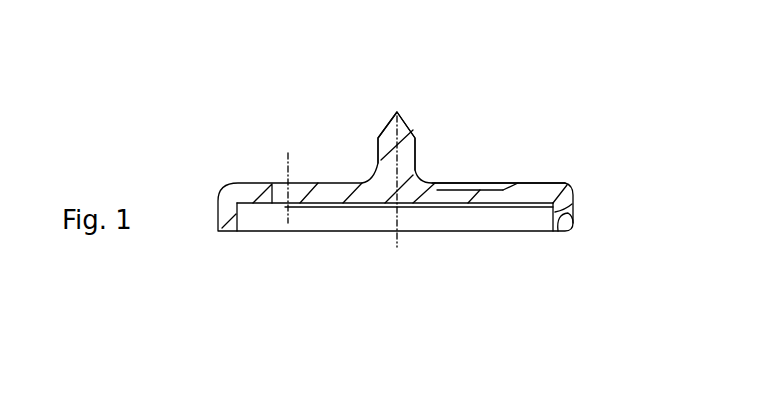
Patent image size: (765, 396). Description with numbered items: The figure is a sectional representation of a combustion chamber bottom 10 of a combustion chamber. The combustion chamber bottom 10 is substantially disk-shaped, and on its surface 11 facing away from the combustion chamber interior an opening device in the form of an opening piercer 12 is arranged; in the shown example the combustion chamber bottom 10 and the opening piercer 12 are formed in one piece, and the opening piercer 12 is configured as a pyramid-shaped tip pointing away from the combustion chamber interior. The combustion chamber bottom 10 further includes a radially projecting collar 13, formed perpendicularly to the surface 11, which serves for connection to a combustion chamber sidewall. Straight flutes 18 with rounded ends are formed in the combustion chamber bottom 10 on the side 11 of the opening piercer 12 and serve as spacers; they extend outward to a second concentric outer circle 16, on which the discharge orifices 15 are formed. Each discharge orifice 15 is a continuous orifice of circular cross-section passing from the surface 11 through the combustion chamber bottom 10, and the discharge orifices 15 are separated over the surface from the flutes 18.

The combustion chamber bottom 10 is at (580, 161).
The surface of the combustion chamber bottom facing away from the combustion chamber 11 is at (542, 185).
The opening piercer 12 is at (414, 136).
The collar 13 is at (575, 213).
The discharge orifice 15 is at (298, 183).
The second concentric outer circle 16 is at (305, 183).
The straight flutes 18 is at (477, 183).